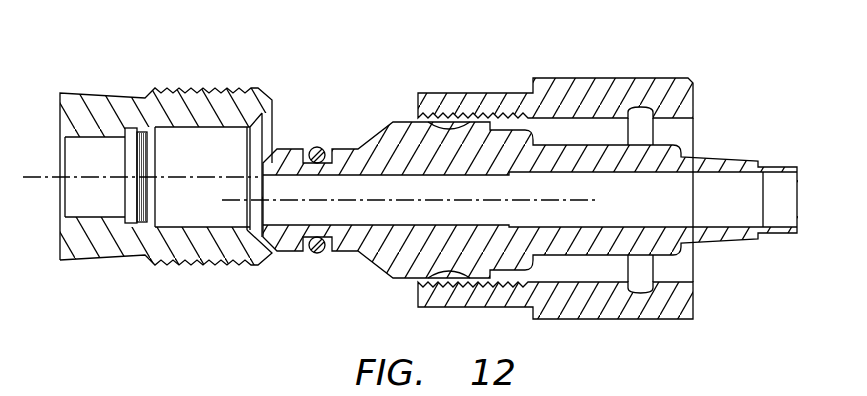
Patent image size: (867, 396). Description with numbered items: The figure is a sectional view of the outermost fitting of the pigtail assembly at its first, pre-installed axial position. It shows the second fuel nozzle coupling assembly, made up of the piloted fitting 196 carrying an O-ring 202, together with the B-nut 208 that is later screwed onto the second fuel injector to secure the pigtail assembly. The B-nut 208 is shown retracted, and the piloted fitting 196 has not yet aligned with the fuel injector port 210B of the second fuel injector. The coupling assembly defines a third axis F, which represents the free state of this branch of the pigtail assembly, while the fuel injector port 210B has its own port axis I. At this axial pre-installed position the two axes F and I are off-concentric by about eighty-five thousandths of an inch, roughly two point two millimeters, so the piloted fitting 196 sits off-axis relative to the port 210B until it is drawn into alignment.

The secondary fuel injector port 210B is at (173, 87).
The O-ring 202 is at (316, 146).
The piloted fitting 196 is at (402, 130).
The B-nut 208 is at (478, 93).
The third axis F is at (340, 200).
The port axis I is at (41, 175).